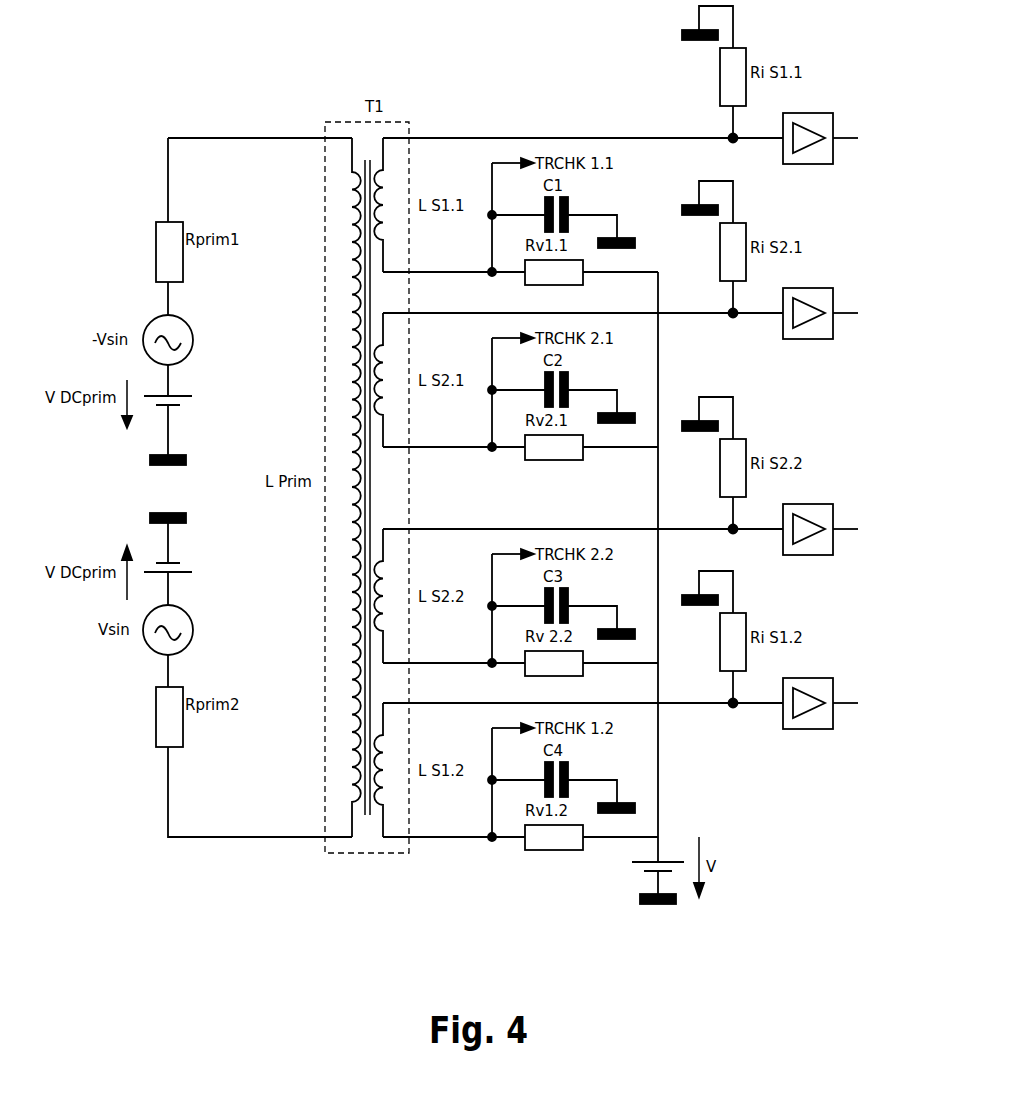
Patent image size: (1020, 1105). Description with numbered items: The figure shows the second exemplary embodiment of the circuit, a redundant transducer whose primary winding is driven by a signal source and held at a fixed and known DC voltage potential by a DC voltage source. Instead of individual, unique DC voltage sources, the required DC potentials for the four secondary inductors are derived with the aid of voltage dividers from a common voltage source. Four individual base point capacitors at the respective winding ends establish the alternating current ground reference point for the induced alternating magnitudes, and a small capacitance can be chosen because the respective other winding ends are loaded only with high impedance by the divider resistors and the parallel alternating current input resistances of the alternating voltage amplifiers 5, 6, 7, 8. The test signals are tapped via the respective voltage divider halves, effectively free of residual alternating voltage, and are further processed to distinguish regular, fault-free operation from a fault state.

The alternating voltage amplifier 5 is at (802, 113).
The alternating voltage amplifier 6 is at (802, 288).
The alternating voltage amplifier 7 is at (802, 504).
The alternating voltage amplifier 8 is at (808, 730).